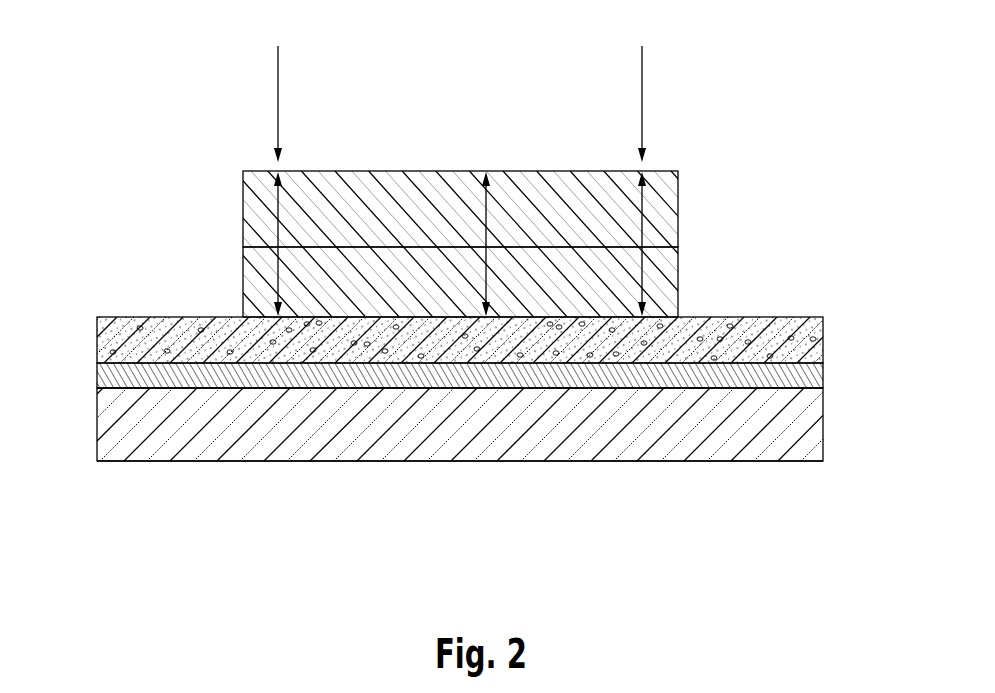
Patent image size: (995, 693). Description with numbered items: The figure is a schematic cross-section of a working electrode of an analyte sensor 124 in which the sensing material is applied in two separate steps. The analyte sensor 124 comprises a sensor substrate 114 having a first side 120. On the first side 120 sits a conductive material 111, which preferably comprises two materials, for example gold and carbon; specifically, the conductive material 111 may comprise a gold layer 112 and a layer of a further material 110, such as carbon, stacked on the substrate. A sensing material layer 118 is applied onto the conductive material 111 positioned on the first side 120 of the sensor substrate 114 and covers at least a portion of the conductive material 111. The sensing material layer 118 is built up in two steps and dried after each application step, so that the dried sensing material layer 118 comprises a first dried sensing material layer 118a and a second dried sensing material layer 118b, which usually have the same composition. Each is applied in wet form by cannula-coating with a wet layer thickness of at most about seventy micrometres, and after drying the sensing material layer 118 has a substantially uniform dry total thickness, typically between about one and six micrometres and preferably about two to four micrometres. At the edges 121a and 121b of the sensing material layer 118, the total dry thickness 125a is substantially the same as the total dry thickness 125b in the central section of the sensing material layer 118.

The layer of a further material 110 is at (104, 343).
The conductive material 111 is at (459, 355).
The gold layer 112 is at (104, 378).
The sensor substrate 114 is at (457, 440).
The sensing material layer 118 is at (480, 209).
The first dried sensing material layer 118a is at (545, 283).
The second dried sensing material layer 118b is at (378, 188).
The first side 120 is at (823, 388).
The edge of the sensing material layer 121a is at (278, 89).
The edge of the sensing material layer 121b is at (644, 89).
The analyte sensor 124 is at (690, 468).
The total dry thickness at the edges 125a is at (460, 244).
The total dry thickness in the central section 125b is at (457, 244).